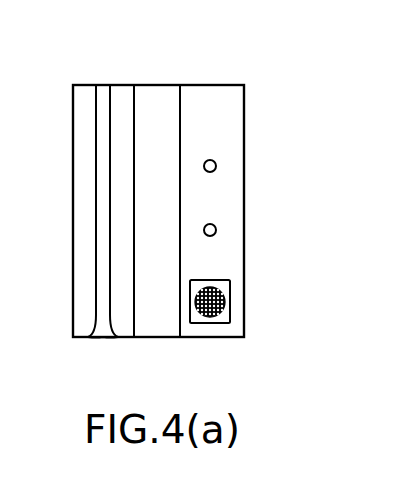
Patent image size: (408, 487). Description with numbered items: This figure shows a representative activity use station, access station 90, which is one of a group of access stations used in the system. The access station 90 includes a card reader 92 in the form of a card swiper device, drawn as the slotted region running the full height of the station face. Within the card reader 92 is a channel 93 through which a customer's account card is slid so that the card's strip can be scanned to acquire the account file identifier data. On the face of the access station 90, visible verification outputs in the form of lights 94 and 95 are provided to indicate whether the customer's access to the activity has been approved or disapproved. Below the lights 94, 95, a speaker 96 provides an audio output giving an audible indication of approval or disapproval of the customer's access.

The access station 90 is at (260, 70).
The card reader 92 is at (87, 167).
The channel 93 is at (100, 337).
The light 94 is at (215, 162).
The light 95 is at (215, 226).
The speaker 96 is at (222, 293).